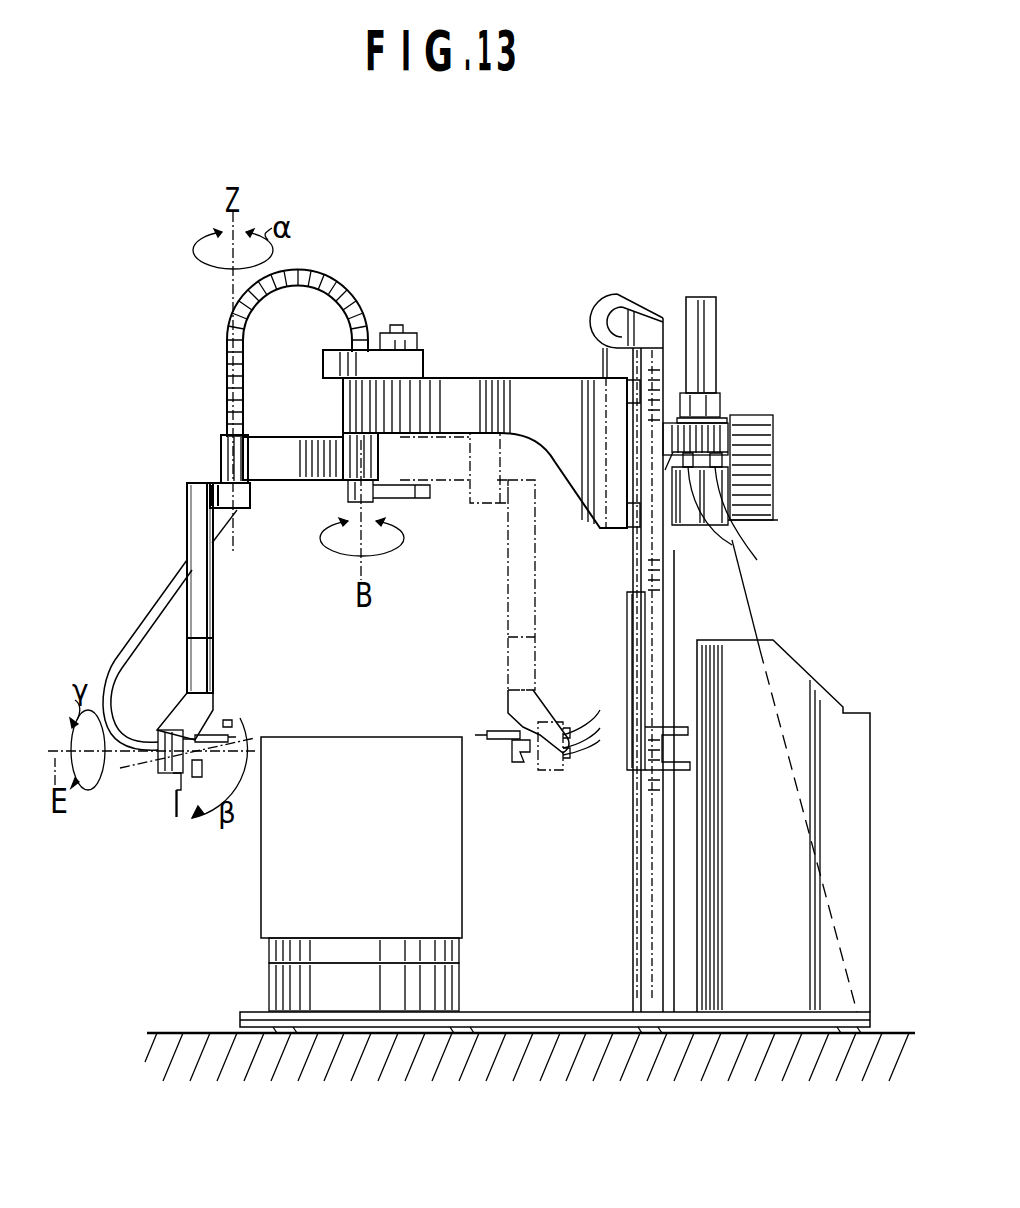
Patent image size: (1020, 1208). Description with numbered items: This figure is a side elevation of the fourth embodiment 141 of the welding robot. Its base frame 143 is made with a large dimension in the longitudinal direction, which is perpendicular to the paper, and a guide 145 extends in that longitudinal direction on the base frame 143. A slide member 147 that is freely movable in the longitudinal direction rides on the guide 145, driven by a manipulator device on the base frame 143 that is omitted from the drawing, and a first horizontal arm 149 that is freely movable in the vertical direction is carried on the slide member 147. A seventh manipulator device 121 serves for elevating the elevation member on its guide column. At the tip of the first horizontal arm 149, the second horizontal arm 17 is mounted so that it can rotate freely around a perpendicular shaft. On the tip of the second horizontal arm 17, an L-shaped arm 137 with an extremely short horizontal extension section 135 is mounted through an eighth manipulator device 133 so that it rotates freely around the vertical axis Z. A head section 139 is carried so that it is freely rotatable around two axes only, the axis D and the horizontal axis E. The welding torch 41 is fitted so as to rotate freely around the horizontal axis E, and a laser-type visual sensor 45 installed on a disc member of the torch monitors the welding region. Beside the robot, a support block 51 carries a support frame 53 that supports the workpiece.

The second horizontal arm 17 is at (288, 437).
The welding torch 41 is at (214, 738).
The laser-type visual sensor 45 is at (198, 777).
The support block 51 is at (268, 992).
The support frame 53 is at (266, 954).
The seventh manipulator device 121 is at (622, 295).
The eighth manipulator device 133 is at (227, 437).
The horizontal extension section 135 is at (215, 483).
The L-shaped arm 137 is at (192, 493).
The head section 139 is at (228, 692).
The fourth embodiment of the welding robot 141 is at (738, 288).
The base frame 143 is at (797, 674).
The guide 145 is at (670, 650).
The slide member 147 is at (642, 566).
The first horizontal arm 149 is at (552, 388).